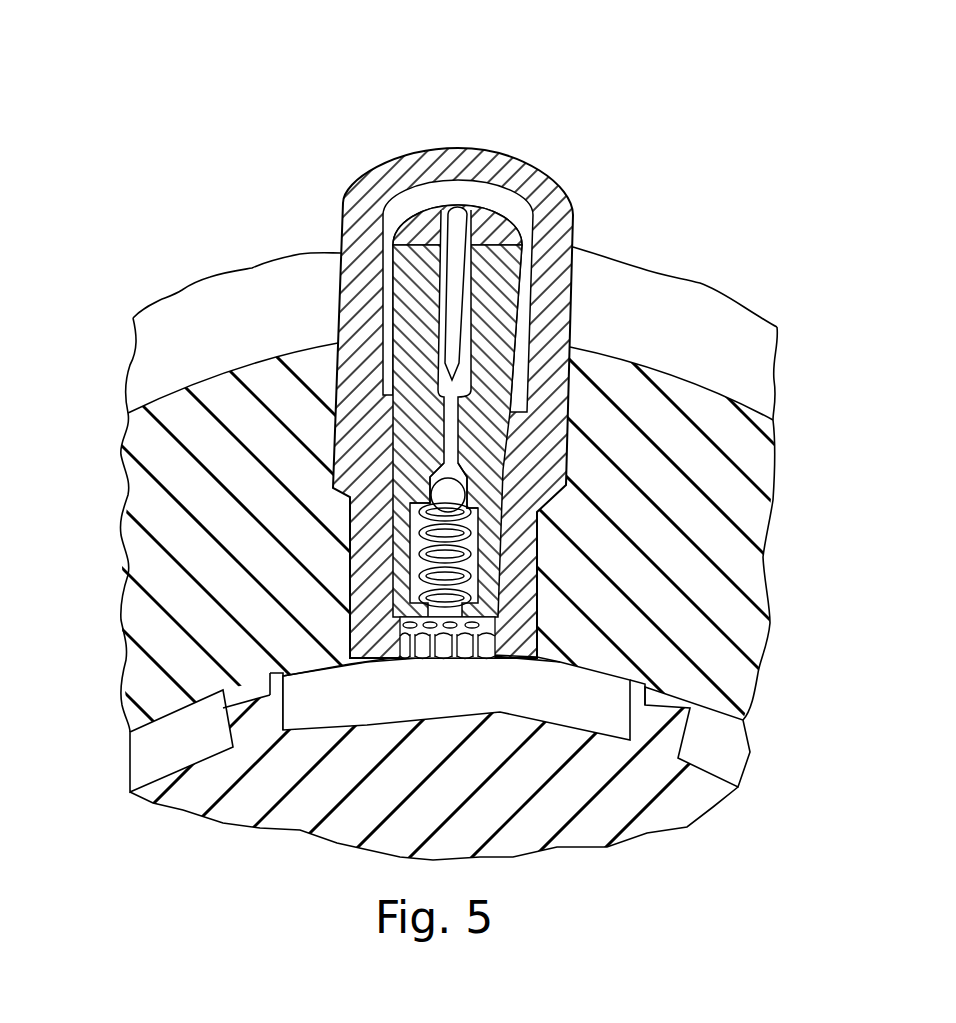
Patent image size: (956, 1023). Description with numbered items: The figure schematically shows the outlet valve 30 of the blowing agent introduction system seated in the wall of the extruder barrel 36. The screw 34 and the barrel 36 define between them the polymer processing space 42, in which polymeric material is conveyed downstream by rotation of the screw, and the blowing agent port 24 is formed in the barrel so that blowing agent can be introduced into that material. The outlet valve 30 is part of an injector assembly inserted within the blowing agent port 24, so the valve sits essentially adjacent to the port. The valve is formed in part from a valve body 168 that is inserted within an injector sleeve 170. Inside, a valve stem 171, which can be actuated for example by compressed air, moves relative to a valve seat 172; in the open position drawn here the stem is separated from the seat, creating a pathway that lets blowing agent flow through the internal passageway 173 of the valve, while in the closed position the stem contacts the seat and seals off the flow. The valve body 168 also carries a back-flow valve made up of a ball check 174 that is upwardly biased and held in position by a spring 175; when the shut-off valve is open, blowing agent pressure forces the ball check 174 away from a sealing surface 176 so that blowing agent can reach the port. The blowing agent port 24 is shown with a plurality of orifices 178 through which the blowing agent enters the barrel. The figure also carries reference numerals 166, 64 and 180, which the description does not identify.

The outlet valve 30 is at (455, 359).
The valve assembly 166 is at (455, 384).
The valve body 168 is at (402, 230).
The injector sleeve 170 is at (548, 187).
The valve stem 171 is at (459, 210).
The valve seat 172 is at (463, 392).
The internal passageway 173 is at (470, 293).
The ball check 174 is at (428, 495).
The spring 175 is at (463, 595).
The sealing surface 176 is at (472, 483).
The orifices 178 is at (428, 668).
The seat surface 180 is at (510, 663).
The insert body 64 is at (415, 277).
The blowing agent port 24 is at (340, 341).
The barrel 36 is at (213, 383).
The screw 34 is at (647, 833).
The polymer processing space 42 is at (124, 768).